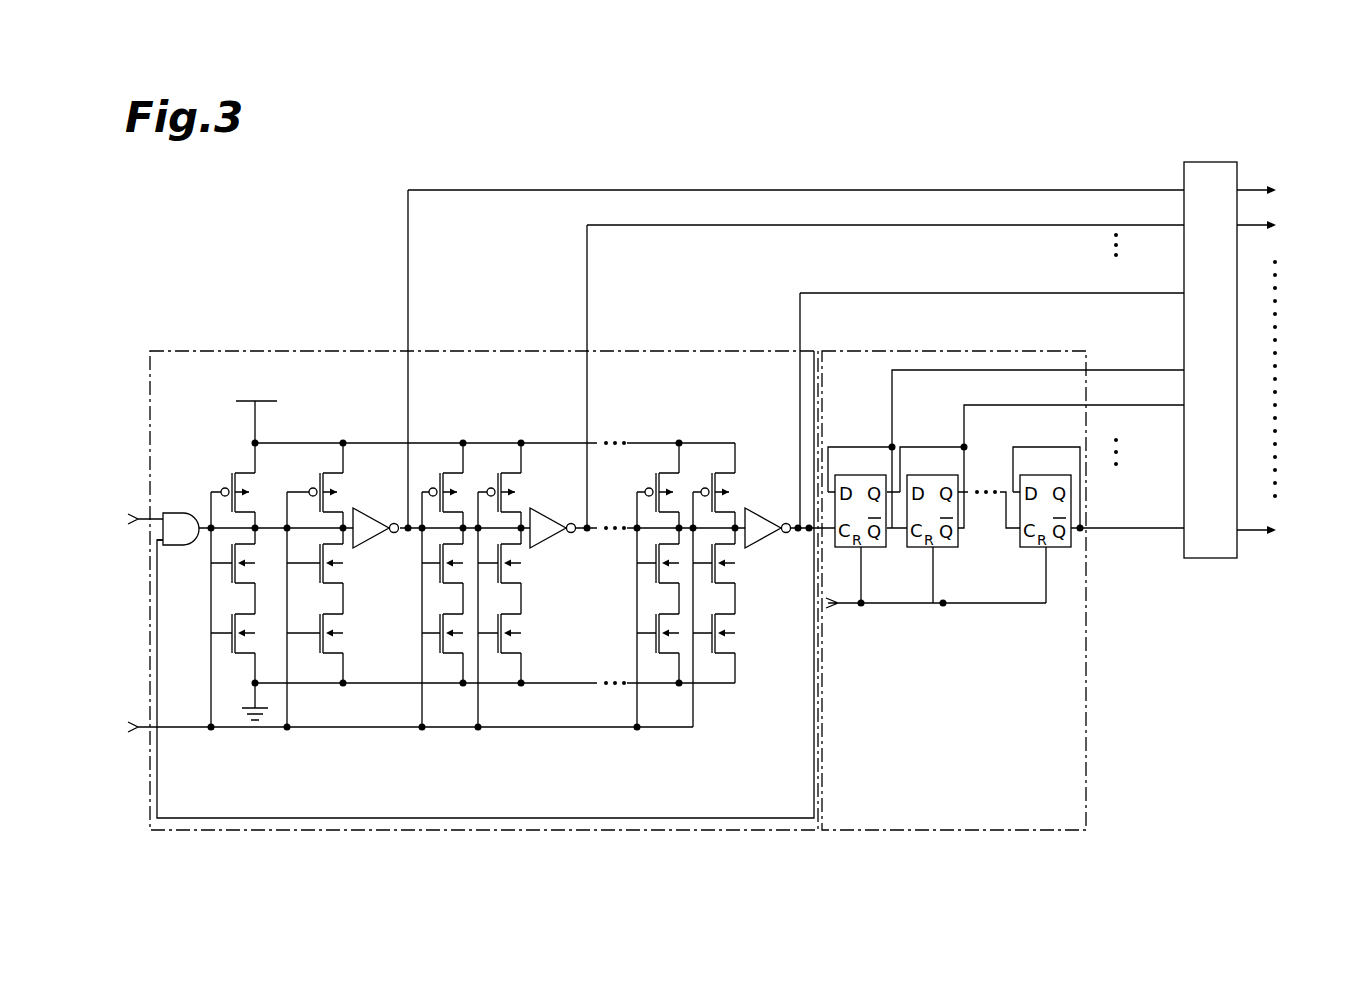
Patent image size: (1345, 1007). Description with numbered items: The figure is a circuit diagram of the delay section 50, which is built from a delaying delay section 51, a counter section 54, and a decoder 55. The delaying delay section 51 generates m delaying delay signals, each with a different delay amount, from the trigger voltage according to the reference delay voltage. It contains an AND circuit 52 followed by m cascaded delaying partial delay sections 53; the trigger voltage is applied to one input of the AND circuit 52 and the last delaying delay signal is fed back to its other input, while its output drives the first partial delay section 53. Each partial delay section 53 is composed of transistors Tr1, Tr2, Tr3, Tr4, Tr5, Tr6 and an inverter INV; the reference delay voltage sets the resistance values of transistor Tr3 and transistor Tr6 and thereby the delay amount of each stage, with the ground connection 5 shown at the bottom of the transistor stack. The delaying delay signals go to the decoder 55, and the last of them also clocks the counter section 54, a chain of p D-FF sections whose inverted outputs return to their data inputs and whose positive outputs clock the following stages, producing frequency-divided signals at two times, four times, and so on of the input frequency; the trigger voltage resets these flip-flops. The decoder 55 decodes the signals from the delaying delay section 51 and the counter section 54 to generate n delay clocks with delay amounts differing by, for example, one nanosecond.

The delay section 50 is at (1263, 108).
The delaying delay section 51 is at (761, 350).
The AND circuit 52 is at (167, 512).
The delaying partial delay section 53 is at (280, 750).
The counter section 54 is at (1061, 350).
The decoder 55 is at (1208, 559).
The ground 5 is at (252, 706).
The transistor Tr1 is at (229, 486).
The transistor Tr2 is at (229, 570).
The transistor Tr3 is at (229, 623).
The transistor Tr4 is at (317, 486).
The transistor Tr5 is at (317, 570).
The transistor Tr6 is at (317, 623).
The inverter INV is at (371, 507).